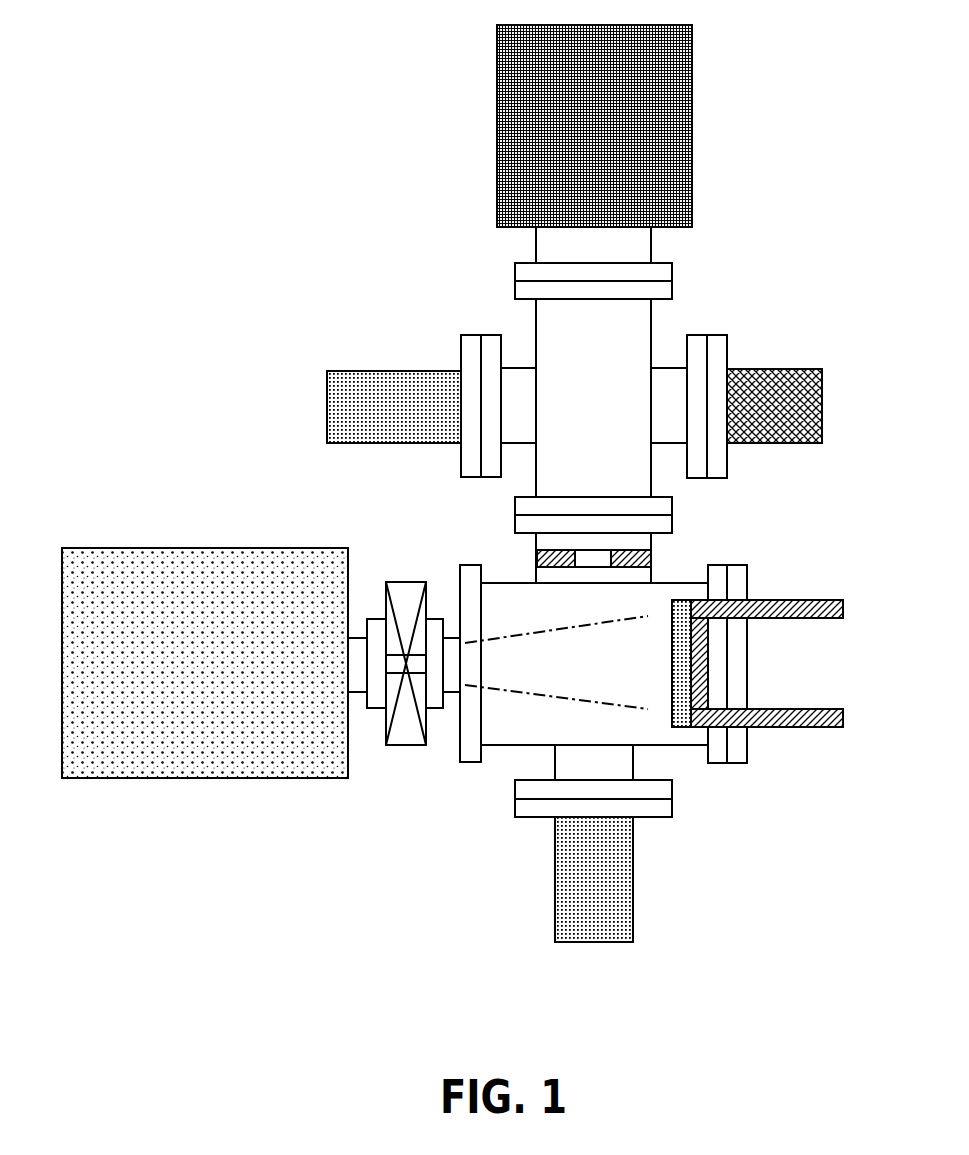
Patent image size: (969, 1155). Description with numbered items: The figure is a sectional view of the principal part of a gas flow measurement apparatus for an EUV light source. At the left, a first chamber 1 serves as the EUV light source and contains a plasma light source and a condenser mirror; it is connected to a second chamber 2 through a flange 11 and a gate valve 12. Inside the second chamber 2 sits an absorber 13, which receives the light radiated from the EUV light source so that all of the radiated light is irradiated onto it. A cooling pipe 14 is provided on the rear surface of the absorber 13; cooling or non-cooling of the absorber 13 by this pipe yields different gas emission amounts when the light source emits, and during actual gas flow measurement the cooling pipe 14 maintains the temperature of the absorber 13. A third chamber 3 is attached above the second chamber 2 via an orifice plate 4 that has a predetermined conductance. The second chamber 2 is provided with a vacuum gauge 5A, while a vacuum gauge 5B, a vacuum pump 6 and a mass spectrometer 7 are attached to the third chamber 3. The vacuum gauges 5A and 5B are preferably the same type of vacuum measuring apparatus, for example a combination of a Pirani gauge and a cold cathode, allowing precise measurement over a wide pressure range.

The first chamber 1 is at (213, 770).
The second chamber 2 is at (507, 733).
The third chamber 3 is at (637, 329).
The orifice plate 4 is at (651, 552).
The vacuum gauge 5A is at (625, 888).
The vacuum gauge 5B is at (385, 380).
The vacuum pump 6 is at (497, 37).
The mass spectrometer 7 is at (768, 369).
The flange 11 is at (440, 652).
The gate valve 12 is at (410, 748).
The absorber 13 is at (670, 660).
The cooling pipe 14 is at (803, 707).